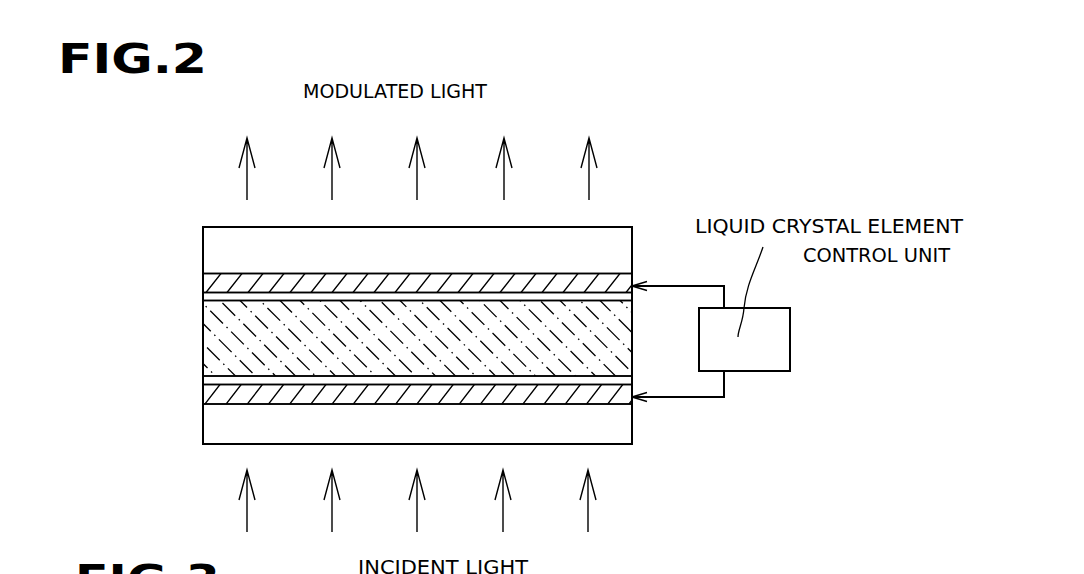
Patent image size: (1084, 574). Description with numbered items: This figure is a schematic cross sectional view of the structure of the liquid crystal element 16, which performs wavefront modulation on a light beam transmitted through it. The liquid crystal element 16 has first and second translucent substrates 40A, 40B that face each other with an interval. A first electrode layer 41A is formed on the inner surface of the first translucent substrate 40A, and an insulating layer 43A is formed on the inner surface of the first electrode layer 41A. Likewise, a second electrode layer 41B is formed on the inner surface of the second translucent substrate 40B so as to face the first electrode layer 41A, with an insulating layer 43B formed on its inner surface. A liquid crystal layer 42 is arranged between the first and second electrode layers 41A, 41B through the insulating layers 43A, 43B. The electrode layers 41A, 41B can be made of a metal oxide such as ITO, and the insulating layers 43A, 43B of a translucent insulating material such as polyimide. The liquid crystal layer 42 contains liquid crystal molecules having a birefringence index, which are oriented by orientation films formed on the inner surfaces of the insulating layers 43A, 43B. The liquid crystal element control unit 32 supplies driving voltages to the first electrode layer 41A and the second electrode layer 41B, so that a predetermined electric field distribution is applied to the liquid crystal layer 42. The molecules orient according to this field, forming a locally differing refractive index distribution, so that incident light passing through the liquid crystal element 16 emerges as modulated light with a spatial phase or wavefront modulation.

The liquid crystal element 16 is at (641, 221).
The liquid crystal element control unit 32 is at (750, 308).
The first translucent substrate 40A is at (212, 250).
The second translucent substrate 40B is at (208, 428).
The first electrode layer 41A is at (208, 282).
The second electrode layer 41B is at (207, 393).
The liquid crystal layer 42 is at (204, 337).
The insulating layer 43A is at (206, 296).
The insulating layer 43B is at (206, 379).